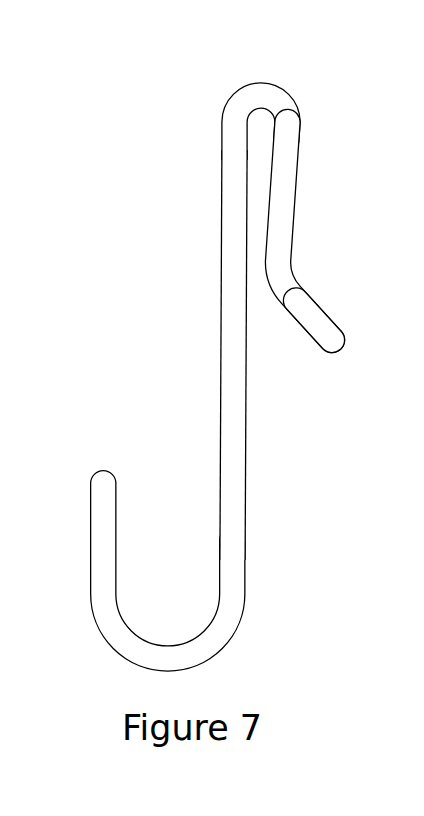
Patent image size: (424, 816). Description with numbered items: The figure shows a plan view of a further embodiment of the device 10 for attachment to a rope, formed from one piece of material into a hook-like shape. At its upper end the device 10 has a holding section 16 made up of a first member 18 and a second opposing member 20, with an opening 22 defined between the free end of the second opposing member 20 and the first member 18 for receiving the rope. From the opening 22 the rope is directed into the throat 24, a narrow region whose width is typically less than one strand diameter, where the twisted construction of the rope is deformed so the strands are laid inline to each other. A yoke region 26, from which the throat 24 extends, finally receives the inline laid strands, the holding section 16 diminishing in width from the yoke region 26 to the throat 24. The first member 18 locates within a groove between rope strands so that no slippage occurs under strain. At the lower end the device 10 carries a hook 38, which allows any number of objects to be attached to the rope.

The device 10 is at (226, 354).
The holding section 16 is at (213, 153).
The first member 18 is at (220, 195).
The second opposing member 20 is at (297, 192).
The opening 22 is at (275, 352).
The throat 24 is at (255, 275).
The yoke region 26 is at (262, 120).
The hook 38 is at (87, 567).